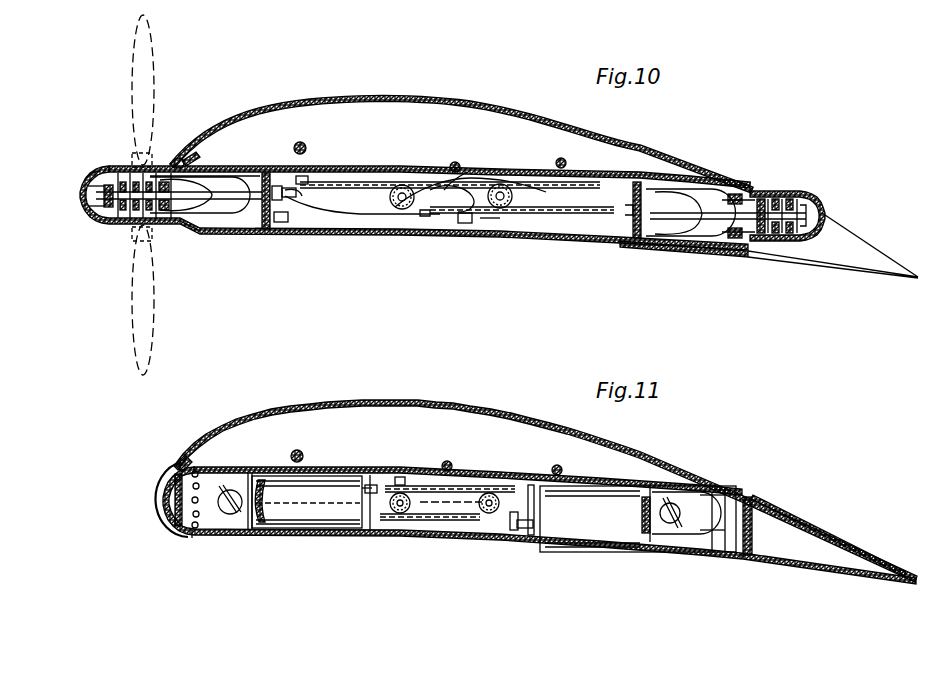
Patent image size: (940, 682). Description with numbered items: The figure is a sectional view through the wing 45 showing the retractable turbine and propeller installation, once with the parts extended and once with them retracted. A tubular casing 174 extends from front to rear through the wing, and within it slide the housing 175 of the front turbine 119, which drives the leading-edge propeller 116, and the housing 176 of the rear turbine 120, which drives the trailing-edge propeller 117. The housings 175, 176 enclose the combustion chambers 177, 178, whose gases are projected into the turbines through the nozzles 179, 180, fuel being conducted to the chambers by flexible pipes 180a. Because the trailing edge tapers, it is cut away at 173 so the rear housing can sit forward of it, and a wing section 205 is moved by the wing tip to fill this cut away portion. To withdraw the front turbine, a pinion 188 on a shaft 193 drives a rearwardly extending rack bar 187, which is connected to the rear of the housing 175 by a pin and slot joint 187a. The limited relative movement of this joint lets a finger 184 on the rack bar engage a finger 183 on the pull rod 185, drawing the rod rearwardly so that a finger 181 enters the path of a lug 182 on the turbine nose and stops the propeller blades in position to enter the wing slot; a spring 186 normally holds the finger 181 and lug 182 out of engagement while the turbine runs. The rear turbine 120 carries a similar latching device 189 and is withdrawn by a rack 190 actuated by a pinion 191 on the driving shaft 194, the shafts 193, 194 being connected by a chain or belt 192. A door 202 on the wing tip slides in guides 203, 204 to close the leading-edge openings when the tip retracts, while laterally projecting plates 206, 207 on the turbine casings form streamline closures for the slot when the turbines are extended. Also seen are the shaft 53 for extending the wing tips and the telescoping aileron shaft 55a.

In FIG. 10, the wing 45 is at (469, 106).
In FIG. 11, the wing 45 is at (432, 408).
In FIG. 10, the shaft 53 is at (456, 162).
In FIG. 11, the shaft 53 is at (452, 464).
In FIG. 10, the telescoping shaft 55a is at (306, 145).
In FIG. 11, the telescoping shaft 55a is at (307, 443).
In FIG. 10, the propeller 116 is at (153, 66).
In FIG. 11, the propeller 116 is at (228, 489).
In FIG. 11, the propeller 117 is at (668, 522).
In FIG. 10, the turbine 119 is at (88, 179).
In FIG. 11, the turbine 119 is at (216, 532).
In FIG. 10, the turbine 120 is at (800, 195).
In FIG. 11, the turbine 120 is at (706, 536).
In FIG. 10, the cut away portion 173 is at (840, 242).
In FIG. 11, the cut away portion 173 is at (846, 536).
In FIG. 10, the tubular casing 174 is at (480, 178).
In FIG. 11, the tubular casing 174 is at (350, 470).
In FIG. 10, the housing 175 is at (226, 171).
In FIG. 11, the housing 175 is at (312, 531).
In FIG. 10, the housing 176 is at (660, 181).
In FIG. 11, the housing 176 is at (607, 480).
In FIG. 10, the combustion chamber 177 is at (216, 214).
In FIG. 10, the combustion chamber 178 is at (682, 236).
In FIG. 10, the nozzle 179 is at (179, 158).
In FIG. 10, the nozzle 180 is at (732, 248).
In FIG. 10, the flexible pipe 180a is at (580, 183).
In FIG. 10, the finger 181 is at (92, 203).
In FIG. 10, the lug 182 is at (110, 170).
In FIG. 10, the finger 183 is at (292, 224).
In FIG. 10, the finger 184 is at (300, 190).
In FIG. 10, the pull rod 185 is at (266, 233).
In FIG. 10, the spring 186 is at (102, 222).
In FIG. 10, the rack bar 187 is at (336, 179).
In FIG. 11, the rack bar 187 is at (420, 485).
In FIG. 10, the pin and slot joint 187a is at (285, 174).
In FIG. 11, the pin and slot joint 187a is at (382, 484).
In FIG. 10, the pinion 188 is at (427, 216).
In FIG. 11, the pinion 188 is at (408, 522).
In FIG. 10, the latching device 189 is at (808, 241).
In FIG. 10, the rack 190 is at (582, 235).
In FIG. 11, the rack 190 is at (440, 522).
In FIG. 10, the pinion 191 is at (502, 222).
In FIG. 11, the pinion 191 is at (472, 504).
In FIG. 10, the chain or belt 192 is at (470, 225).
In FIG. 10, the shaft 193 is at (390, 199).
In FIG. 11, the shaft 193 is at (398, 512).
In FIG. 10, the shaft 194 is at (513, 196).
In FIG. 11, the shaft 194 is at (485, 512).
In FIG. 11, the door 202 is at (160, 487).
In FIG. 10, the guide 203 is at (190, 160).
In FIG. 11, the guide 203 is at (176, 462).
In FIG. 10, the guide 204 is at (196, 236).
In FIG. 11, the guide 204 is at (194, 538).
In FIG. 11, the wing section 205 is at (806, 521).
In FIG. 11, the laterally projecting plate 206 is at (268, 500).
In FIG. 11, the laterally projecting plate 207 is at (640, 516).